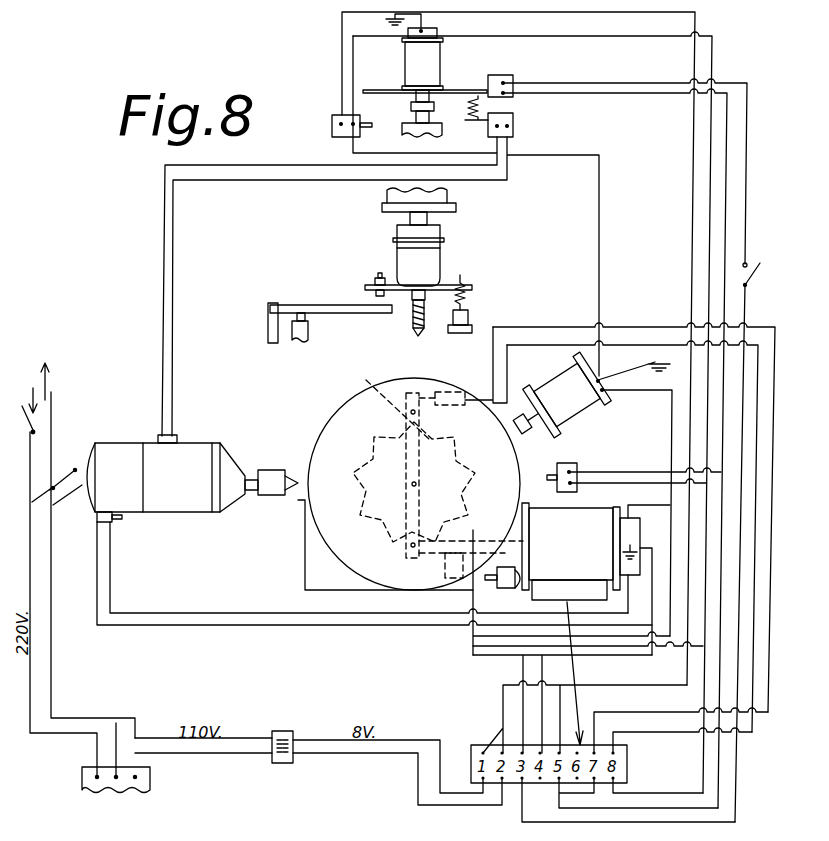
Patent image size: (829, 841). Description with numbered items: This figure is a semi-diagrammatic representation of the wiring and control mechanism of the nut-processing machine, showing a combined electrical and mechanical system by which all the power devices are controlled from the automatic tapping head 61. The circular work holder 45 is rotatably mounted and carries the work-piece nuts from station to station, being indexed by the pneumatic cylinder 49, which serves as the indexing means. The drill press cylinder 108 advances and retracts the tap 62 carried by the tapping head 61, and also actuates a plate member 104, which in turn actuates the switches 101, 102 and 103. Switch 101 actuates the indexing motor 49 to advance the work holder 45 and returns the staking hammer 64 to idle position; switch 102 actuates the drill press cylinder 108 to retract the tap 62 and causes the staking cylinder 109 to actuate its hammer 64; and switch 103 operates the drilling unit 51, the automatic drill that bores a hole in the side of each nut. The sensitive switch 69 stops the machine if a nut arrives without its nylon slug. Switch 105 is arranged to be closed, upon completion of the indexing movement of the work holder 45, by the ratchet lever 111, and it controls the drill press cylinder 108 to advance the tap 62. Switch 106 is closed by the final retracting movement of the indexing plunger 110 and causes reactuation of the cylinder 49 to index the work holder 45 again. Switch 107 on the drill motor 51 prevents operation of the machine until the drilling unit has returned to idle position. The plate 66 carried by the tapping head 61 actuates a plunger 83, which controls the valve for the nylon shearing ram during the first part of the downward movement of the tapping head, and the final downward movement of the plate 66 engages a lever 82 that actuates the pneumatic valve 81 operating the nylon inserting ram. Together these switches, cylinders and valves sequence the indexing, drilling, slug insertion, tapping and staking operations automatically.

The drill press cylinder 108 is at (405, 52).
The plate member 104 is at (382, 92).
The switch 101 is at (512, 67).
The switch 103 is at (520, 125).
The switch 102 is at (332, 128).
The automatic tapping head 61 is at (440, 256).
The tap 62 is at (412, 318).
The plate 66 is at (392, 280).
The plunger 83 is at (468, 318).
The lever 82 is at (322, 310).
The pneumatic valve 81 is at (294, 340).
The circular work holder 45 is at (346, 418).
The ratchet lever 111 is at (366, 384).
The switch 105 is at (446, 390).
The indexing plunger 110 is at (428, 574).
The automatic drill 51 is at (135, 457).
The switch 107 is at (112, 521).
The staking cylinder 109 is at (563, 388).
The staking hammer 64 is at (532, 434).
The sensitive switch 69 is at (567, 466).
The pneumatic cylinder 49 is at (528, 520).
The switch 106 is at (520, 578).